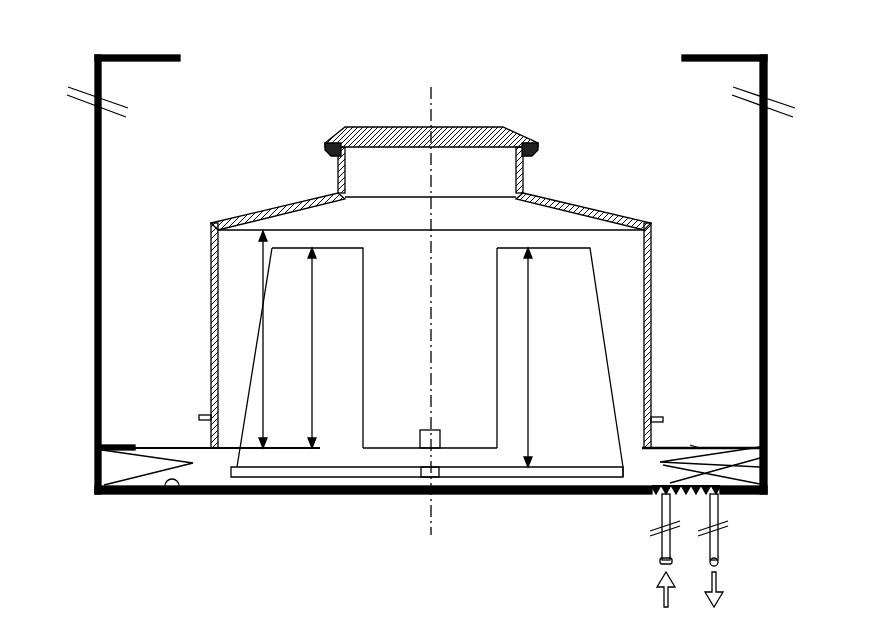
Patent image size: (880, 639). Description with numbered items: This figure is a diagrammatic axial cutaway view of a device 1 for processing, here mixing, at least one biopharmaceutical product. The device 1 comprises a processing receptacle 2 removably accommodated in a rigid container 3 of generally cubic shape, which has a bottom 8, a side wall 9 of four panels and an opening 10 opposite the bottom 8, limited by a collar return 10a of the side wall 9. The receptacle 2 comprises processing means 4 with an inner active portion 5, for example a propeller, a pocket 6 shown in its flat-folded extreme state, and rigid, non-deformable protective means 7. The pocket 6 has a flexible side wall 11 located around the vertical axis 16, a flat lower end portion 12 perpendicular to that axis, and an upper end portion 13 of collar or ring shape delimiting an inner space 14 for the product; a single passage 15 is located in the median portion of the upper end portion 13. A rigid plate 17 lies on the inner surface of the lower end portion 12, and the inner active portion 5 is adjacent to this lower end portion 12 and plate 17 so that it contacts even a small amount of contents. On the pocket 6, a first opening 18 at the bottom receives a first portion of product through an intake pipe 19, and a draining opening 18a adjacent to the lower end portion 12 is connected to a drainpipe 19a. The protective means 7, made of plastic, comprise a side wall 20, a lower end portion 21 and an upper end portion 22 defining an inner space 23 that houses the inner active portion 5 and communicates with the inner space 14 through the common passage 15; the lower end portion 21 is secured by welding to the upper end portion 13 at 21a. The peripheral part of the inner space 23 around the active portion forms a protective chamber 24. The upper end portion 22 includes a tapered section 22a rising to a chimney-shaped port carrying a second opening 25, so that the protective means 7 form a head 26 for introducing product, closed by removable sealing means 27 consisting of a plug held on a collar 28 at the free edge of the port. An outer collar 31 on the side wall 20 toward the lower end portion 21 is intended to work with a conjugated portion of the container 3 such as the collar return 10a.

The device 1 is at (305, 509).
The processing receptacle 2 is at (680, 324).
The rigid container 3 is at (768, 270).
The processing means 4 is at (562, 440).
The inner active portion 5 is at (332, 432).
The pocket 6 is at (212, 473).
The protective means 7 is at (206, 313).
The bottom 8 is at (120, 494).
The side wall 9 is at (96, 290).
The opening 10 is at (630, 54).
The collar return 10a is at (712, 55).
The flexible side wall 11 is at (125, 452).
The flat lower end portion 12 is at (170, 490).
The upper end portion 13 is at (133, 445).
The inner space 14 is at (690, 445).
The passage 15 is at (633, 452).
The vertical axis 16 is at (430, 87).
The rigid plate 17 is at (255, 493).
The first opening 18 is at (760, 467).
The draining opening 18a is at (720, 492).
The intake pipe 19 is at (662, 552).
The drainpipe 19a is at (718, 550).
The side wall 20 is at (651, 257).
The lower end portion 21 is at (668, 447).
The weld 21a is at (165, 445).
The upper end portion 22 is at (463, 287).
The tapered section 22a is at (250, 210).
The inner space 23 is at (498, 235).
The protective chamber 24 is at (230, 268).
The second opening 25 is at (455, 160).
The head 26 is at (527, 127).
The removable sealing means 27 is at (378, 127).
The collar 28 is at (332, 145).
The outer collar 31 is at (203, 413).